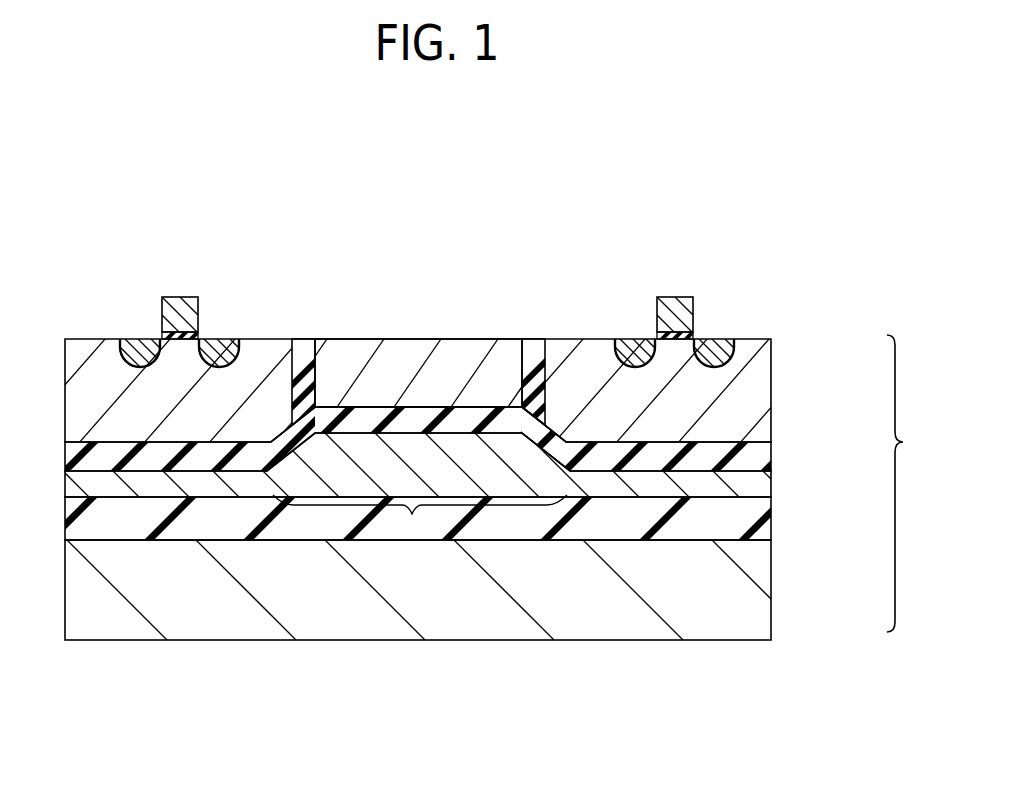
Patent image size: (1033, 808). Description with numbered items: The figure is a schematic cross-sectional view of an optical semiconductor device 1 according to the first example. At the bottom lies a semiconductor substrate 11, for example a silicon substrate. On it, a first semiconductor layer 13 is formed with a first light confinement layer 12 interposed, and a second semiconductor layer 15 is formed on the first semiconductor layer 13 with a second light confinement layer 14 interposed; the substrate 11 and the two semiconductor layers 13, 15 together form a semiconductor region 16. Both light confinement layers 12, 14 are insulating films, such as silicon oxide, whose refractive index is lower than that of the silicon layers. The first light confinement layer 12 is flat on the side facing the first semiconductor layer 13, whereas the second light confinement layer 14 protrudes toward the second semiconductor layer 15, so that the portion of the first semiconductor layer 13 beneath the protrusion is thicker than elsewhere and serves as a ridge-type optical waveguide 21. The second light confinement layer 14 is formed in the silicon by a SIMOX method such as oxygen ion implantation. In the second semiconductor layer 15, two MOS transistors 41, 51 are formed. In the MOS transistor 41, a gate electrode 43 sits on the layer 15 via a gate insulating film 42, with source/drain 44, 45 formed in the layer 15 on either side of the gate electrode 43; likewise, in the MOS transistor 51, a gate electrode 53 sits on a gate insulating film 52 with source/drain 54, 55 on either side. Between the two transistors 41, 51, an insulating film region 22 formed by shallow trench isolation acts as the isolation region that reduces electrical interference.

The optical semiconductor device 1 is at (573, 245).
The semiconductor substrate 11 is at (750, 605).
The first light confinement layer 12 is at (110, 523).
The first semiconductor layer 13 is at (753, 483).
The second light confinement layer 14 is at (648, 452).
The second semiconductor layer 15 is at (753, 380).
The semiconductor region 16 is at (913, 483).
The optical waveguide 21 is at (412, 515).
The insulating film region 22 is at (537, 338).
The MOS transistor 41 is at (196, 274).
The gate insulating film 42 is at (190, 333).
The gate electrode 43 is at (183, 306).
The source/drain 44 is at (142, 350).
The source/drain 45 is at (228, 350).
The MOS transistor 51 is at (691, 274).
The gate insulating film 52 is at (685, 333).
The gate electrode 53 is at (678, 306).
The source/drain 54 is at (637, 350).
The source/drain 55 is at (723, 350).